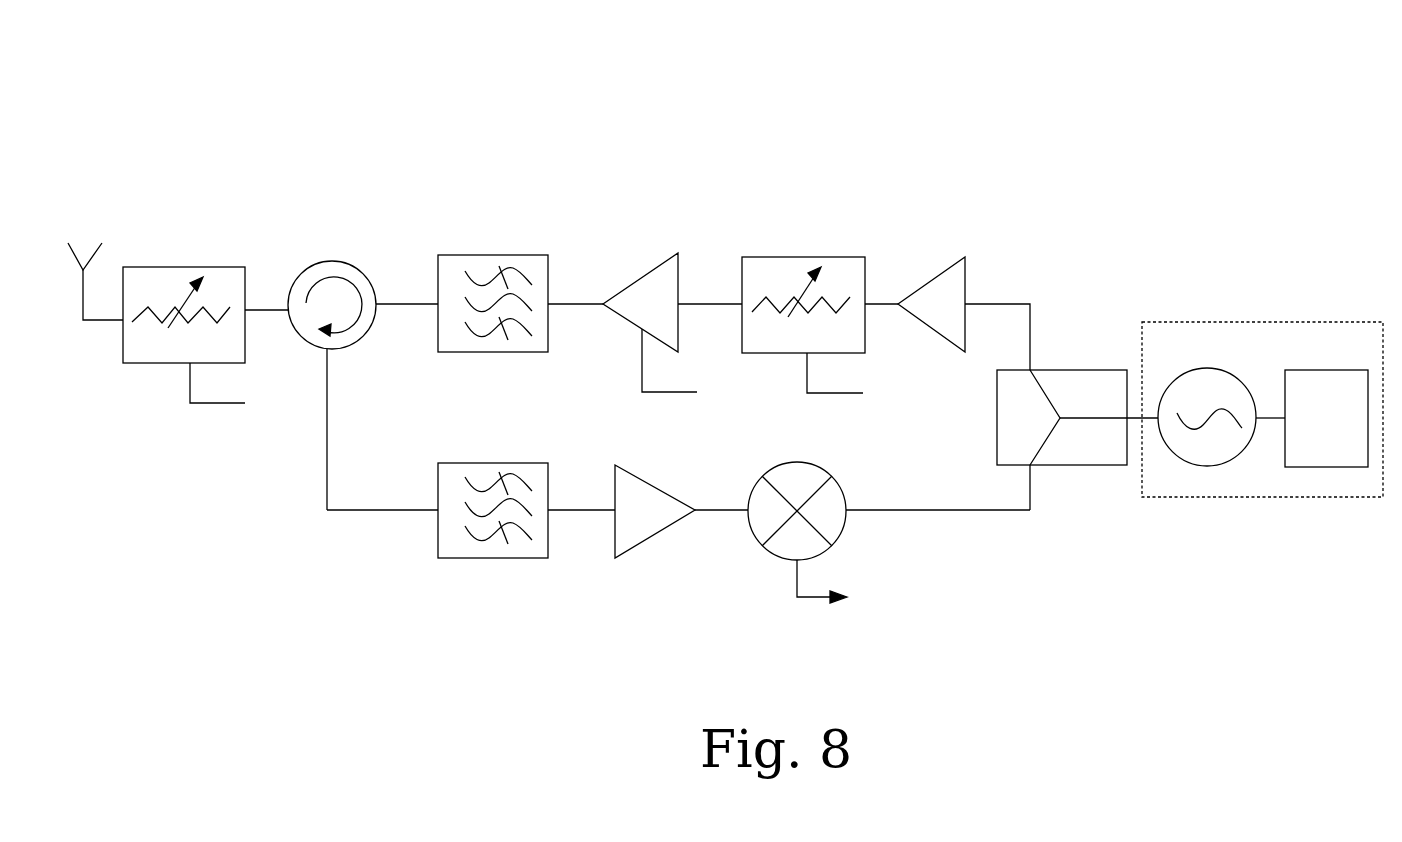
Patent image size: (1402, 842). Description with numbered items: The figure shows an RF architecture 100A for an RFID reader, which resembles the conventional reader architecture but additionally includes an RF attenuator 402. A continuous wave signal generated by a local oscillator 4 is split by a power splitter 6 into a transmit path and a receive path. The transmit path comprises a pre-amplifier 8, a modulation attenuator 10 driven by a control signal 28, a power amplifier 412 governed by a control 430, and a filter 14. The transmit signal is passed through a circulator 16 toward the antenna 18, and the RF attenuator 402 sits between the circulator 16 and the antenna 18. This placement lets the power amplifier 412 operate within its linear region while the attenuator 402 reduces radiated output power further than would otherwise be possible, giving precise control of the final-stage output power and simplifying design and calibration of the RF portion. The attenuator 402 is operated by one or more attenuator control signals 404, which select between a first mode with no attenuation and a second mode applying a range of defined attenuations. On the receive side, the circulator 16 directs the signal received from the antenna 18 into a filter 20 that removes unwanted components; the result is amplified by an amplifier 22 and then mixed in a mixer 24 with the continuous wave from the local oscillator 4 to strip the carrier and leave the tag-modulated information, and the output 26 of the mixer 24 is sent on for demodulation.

The RF architecture 100A is at (1192, 169).
The antenna 18 is at (99, 240).
The RF attenuator 402 is at (205, 278).
The attenuator control signal 404 is at (255, 410).
The circulator 16 is at (363, 342).
The filter 14 is at (520, 265).
The power amplifier 412 is at (672, 266).
The control for the power amplifier 430 is at (697, 388).
The modulation attenuator 10 is at (820, 267).
The control signal 28 is at (865, 401).
The pre-amplifier 8 is at (964, 279).
The power splitter 6 is at (1002, 401).
The local oscillator 4 is at (1262, 366).
The filter 20 is at (516, 556).
The amplifier 22 is at (665, 548).
The mixer 24 is at (779, 547).
The output 26 is at (856, 606).